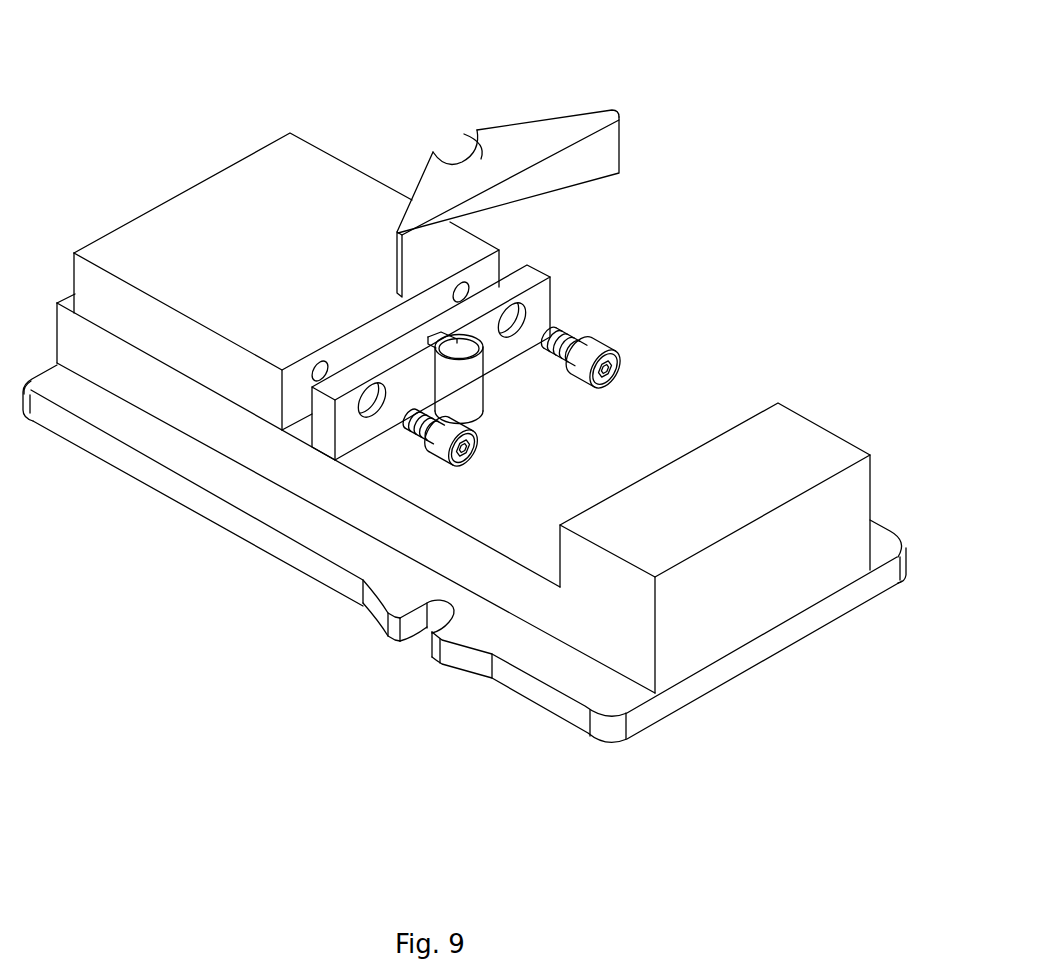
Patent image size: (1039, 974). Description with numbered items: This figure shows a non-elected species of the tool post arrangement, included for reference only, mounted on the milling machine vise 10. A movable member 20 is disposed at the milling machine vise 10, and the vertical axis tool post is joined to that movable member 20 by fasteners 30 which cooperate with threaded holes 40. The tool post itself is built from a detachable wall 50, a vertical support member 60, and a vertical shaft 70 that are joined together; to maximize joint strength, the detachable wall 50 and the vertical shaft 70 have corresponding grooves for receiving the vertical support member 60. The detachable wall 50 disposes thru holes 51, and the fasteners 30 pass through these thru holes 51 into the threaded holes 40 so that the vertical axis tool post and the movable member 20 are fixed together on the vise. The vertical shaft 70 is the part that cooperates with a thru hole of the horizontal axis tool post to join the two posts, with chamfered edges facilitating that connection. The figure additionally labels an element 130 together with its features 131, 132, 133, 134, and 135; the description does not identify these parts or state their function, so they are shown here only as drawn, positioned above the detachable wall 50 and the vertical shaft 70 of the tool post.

The milling machine vise 10 is at (833, 522).
The movable member 20 is at (130, 327).
The fasteners 30 is at (600, 355).
The threaded holes 40 is at (313, 368).
The detachable wall 50 is at (537, 273).
The thru holes 51 is at (523, 317).
The vertical support member 60 is at (440, 332).
The vertical shaft 70 is at (452, 385).
The blade 130 is at (503, 155).
The notch 131 is at (475, 133).
The tip 132 is at (421, 172).
The mounting tab 133 is at (353, 203).
The blade body 134 is at (612, 137).
The cutting edge 135 is at (602, 113).